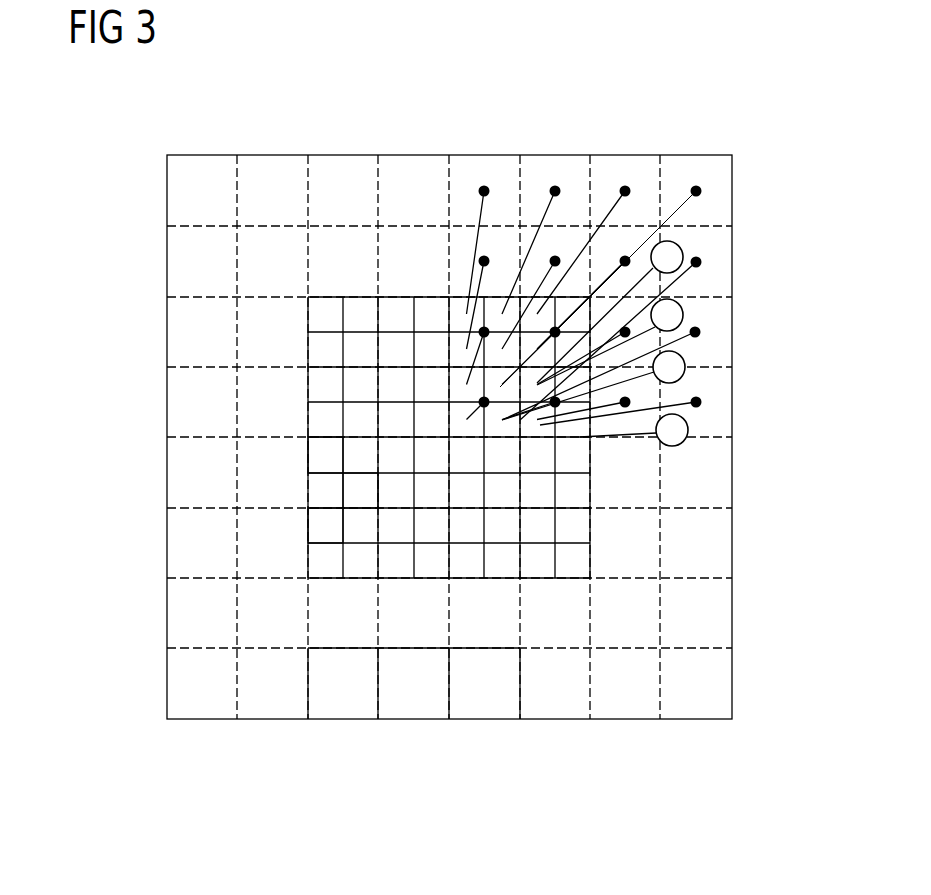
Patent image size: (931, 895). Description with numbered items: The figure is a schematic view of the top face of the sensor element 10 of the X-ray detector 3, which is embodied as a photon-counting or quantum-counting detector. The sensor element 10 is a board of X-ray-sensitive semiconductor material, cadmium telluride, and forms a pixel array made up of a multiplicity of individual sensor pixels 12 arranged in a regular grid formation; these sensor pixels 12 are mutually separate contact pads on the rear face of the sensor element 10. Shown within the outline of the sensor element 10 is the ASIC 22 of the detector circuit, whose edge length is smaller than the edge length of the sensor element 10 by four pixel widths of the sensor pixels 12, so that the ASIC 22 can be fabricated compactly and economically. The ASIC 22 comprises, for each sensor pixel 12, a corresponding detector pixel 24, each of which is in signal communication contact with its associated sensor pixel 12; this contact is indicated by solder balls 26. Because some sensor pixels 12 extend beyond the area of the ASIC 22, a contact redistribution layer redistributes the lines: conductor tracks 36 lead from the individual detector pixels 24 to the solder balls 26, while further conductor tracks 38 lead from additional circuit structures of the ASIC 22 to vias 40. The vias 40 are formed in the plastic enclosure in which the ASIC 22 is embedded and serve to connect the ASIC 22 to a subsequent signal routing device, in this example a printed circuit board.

The X-ray detector 3 is at (661, 94).
The sensor element 10 is at (278, 154).
The sensor pixel 12 is at (340, 707).
The ASIC 22 is at (309, 387).
The detector pixel 24 is at (328, 455).
The solder ball 26 is at (486, 185).
The conductor track 36 is at (681, 211).
The conductor track 38 is at (642, 378).
The via 40 is at (683, 250).